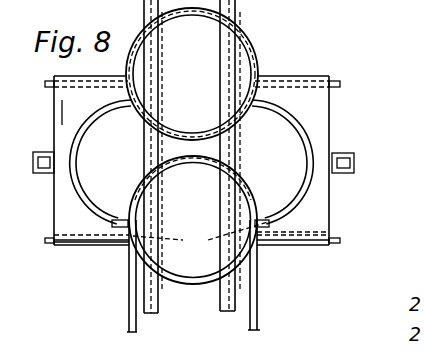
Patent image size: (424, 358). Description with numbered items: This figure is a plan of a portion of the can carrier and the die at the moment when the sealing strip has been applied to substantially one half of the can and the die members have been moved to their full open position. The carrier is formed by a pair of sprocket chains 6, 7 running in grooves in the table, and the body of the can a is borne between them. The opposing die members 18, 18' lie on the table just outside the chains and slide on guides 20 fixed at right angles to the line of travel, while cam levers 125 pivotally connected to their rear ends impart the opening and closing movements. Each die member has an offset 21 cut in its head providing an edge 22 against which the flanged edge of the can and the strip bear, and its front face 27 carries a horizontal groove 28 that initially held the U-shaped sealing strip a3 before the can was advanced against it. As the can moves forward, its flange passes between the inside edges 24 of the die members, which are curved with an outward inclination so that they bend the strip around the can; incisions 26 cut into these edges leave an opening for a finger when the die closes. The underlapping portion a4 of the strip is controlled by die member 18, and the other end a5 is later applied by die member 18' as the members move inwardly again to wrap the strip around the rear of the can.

The die member 18 is at (219, 160).
The die member 18' is at (40, 120).
The guides 20 is at (340, 80).
The cam levers 125 is at (352, 160).
The offset 21 is at (79, 159).
The edge 22 is at (86, 127).
The incisions 26 is at (109, 219).
The horizontal grooves 28 is at (299, 243).
The inside edges 24 is at (200, 244).
The front faces 27 is at (102, 250).
The sprocket chain 6 is at (156, 309).
The sprocket chain 7 is at (229, 310).
The body of the can a is at (195, 272).
The sealing strip a3 is at (246, 180).
The underlapping portion of the strip a4 is at (275, 278).
The end of the sealing strip a5 is at (129, 328).